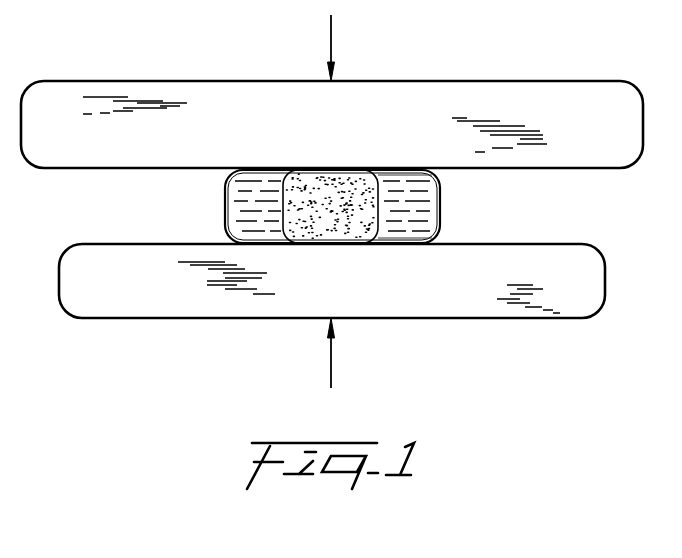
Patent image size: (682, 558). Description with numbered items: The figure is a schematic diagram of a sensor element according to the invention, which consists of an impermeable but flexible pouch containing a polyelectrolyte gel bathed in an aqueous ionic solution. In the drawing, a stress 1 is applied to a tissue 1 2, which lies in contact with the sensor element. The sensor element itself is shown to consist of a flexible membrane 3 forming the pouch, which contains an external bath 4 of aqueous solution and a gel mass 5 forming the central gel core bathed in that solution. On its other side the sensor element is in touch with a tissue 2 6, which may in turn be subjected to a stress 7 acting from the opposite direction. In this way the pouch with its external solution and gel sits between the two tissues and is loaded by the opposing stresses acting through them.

The stress 1 is at (331, 32).
The tissue 1 2 is at (593, 80).
The flexible membrane 3 is at (225, 205).
The external bath 4 is at (410, 223).
The gel mass 5 is at (355, 193).
The tissue 2 6 is at (538, 318).
The stress 7 is at (331, 375).